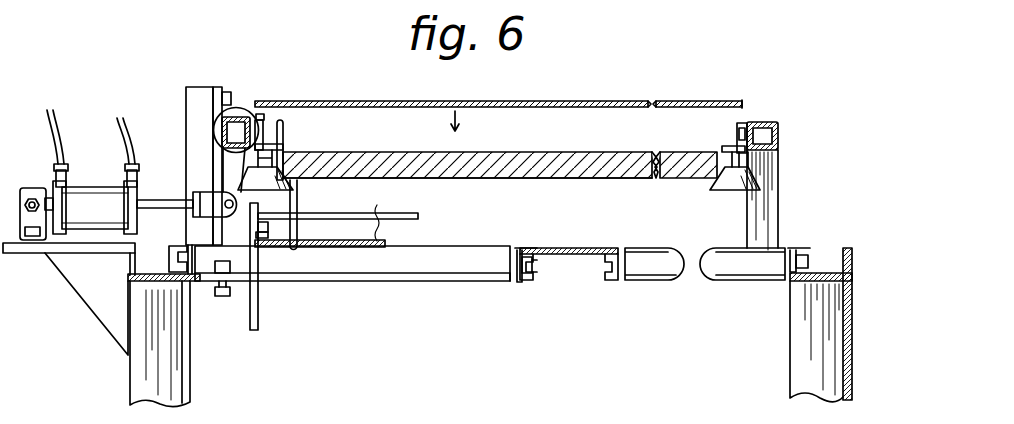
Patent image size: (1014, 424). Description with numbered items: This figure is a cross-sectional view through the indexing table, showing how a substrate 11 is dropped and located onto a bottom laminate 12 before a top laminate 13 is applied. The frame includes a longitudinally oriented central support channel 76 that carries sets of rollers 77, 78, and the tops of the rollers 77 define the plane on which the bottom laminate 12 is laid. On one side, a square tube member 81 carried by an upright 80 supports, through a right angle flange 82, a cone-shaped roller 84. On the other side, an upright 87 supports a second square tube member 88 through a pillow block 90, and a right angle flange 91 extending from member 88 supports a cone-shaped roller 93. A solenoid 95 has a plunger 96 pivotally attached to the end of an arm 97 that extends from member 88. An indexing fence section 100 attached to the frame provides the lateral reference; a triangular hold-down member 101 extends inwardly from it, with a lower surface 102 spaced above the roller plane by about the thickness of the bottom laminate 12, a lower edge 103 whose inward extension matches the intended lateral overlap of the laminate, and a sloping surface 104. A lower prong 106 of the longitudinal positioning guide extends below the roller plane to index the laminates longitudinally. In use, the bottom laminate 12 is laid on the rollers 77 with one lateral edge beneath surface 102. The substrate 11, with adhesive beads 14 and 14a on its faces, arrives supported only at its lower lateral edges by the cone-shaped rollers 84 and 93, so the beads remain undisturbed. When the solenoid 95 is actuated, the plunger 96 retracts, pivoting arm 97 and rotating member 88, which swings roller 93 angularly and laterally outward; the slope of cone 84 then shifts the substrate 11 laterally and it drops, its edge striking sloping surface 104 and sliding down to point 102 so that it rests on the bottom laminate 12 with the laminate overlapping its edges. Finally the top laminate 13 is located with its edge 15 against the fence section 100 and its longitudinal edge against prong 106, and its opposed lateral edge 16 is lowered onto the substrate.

The substrate 11 is at (368, 238).
The bottom laminate 12 is at (384, 250).
The top laminate 13 is at (586, 103).
The bead of adhesive 14 is at (536, 152).
The bead of adhesive 14a is at (531, 179).
The edge of top laminate 15 is at (279, 142).
The opposed lateral edge of top laminate 16 is at (743, 100).
The central support channel 76 is at (574, 255).
The rollers 77 is at (503, 284).
The rollers 78 is at (642, 282).
The post 80 is at (780, 158).
The square tube member 81 is at (777, 121).
The right angle flange 82 is at (737, 141).
The cone-shaped roller 84 is at (760, 173).
The upright 87 is at (198, 87).
The square tube member 88 is at (238, 125).
The pillow block 90 is at (241, 108).
The right angle flange 91 is at (265, 115).
The cone-shaped roller 93 is at (276, 150).
The solenoid 95 is at (76, 183).
The plunger 96 is at (226, 168).
The arm 97 is at (158, 195).
The indexing fence section 100 is at (255, 331).
The hold-down member 101 is at (267, 238).
The lower surface 102 is at (262, 240).
The lower edge 103 is at (280, 247).
The sloping surface 104 is at (262, 230).
The lower prong 106 is at (303, 208).